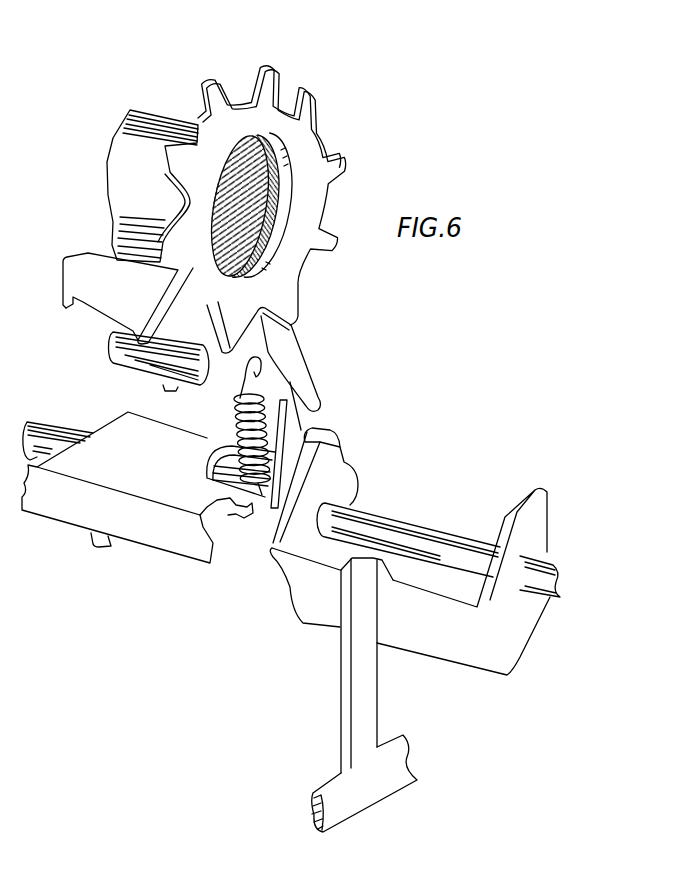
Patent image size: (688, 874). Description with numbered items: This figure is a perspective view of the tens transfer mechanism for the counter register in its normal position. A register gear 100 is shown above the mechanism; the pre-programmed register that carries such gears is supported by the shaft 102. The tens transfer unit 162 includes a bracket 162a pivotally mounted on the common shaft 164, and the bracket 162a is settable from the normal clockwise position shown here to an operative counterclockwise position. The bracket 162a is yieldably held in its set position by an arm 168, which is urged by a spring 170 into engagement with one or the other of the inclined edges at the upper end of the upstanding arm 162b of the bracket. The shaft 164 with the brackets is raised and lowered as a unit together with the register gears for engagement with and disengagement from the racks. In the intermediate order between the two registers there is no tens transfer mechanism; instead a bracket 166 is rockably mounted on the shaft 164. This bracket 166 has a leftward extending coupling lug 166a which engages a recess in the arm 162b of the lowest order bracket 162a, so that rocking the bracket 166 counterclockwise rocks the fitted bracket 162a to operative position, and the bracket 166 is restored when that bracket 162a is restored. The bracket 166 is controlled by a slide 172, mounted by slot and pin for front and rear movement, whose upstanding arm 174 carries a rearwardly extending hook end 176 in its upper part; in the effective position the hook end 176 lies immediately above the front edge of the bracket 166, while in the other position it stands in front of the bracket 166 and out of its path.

The register gear 100 is at (303, 122).
The shaft 102 is at (127, 180).
The tens transfer unit 162 is at (226, 515).
The bracket 162a is at (187, 538).
The upstanding arm 162b is at (293, 428).
The common shaft 164 is at (443, 557).
The bracket 166 is at (396, 506).
The coupling lug 166a is at (322, 447).
The arm 168 is at (270, 370).
The spring 170 is at (242, 420).
The slide 172 is at (398, 770).
The upstanding arm 174 is at (305, 669).
The hook end 176 is at (373, 568).